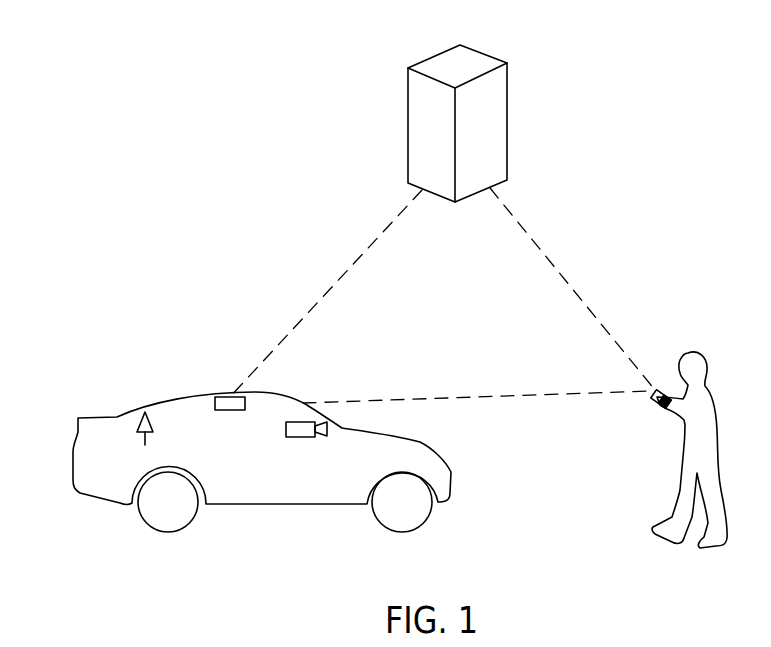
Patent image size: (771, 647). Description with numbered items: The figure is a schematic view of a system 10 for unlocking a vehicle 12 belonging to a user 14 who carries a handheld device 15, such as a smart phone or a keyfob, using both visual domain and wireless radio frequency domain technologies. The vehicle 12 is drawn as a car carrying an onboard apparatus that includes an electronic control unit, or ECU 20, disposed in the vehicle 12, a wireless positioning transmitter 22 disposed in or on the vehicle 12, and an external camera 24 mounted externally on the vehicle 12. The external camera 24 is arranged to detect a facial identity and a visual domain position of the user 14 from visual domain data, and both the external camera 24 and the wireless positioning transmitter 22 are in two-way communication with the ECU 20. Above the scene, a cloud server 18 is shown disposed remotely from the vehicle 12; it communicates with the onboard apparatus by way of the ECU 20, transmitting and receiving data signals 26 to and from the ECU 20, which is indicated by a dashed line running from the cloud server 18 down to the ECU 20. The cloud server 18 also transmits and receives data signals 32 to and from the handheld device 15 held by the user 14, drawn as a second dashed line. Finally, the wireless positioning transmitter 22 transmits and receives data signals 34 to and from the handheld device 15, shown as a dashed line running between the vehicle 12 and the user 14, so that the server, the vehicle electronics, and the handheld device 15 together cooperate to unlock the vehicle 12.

The system 10 is at (246, 160).
The vehicle 12 is at (155, 408).
The user 14 is at (693, 356).
The handheld device 15 is at (656, 398).
The cloud server 18 is at (471, 77).
The electronic control unit (ECU) 20 is at (223, 398).
The wireless positioning transmitter 22 is at (145, 440).
The external camera 24 is at (300, 437).
The data signals 26 is at (347, 275).
The data signals 32 is at (545, 248).
The data signals 34 is at (480, 397).